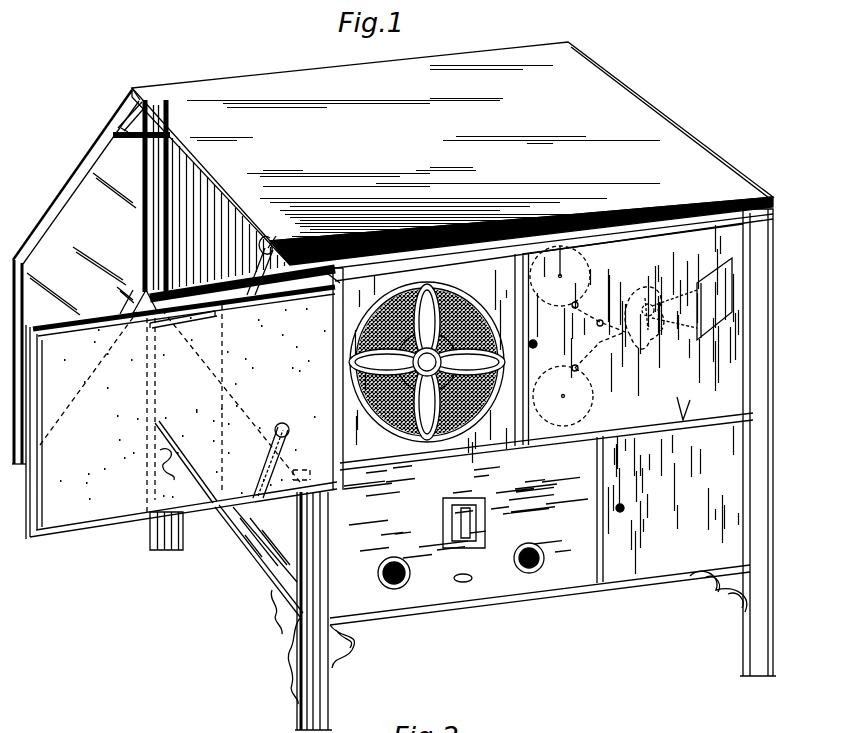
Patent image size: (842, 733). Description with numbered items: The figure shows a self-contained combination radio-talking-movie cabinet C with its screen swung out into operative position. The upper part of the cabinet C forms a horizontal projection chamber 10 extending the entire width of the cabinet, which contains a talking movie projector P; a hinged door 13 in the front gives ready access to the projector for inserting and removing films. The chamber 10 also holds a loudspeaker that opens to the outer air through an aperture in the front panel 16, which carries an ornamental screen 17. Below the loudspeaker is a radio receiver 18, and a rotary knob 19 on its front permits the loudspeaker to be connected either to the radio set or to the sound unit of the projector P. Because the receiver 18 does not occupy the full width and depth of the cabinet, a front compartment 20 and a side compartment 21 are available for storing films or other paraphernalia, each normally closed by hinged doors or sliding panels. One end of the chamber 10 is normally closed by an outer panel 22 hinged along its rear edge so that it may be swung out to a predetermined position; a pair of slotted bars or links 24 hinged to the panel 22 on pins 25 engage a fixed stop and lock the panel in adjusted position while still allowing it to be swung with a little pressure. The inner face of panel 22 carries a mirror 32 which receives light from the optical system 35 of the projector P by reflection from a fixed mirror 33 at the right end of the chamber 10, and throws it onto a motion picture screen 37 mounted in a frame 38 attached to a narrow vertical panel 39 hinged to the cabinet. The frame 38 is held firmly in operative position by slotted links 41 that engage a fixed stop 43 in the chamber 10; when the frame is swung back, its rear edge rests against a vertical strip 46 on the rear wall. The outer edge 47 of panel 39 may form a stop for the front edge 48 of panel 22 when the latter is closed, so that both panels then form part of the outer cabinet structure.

The cabinet C is at (713, 162).
The projection chamber 10 is at (207, 204).
The hinged door 13 is at (665, 237).
The talking movie projector P is at (580, 252).
The front panel 16 is at (490, 425).
The ornamental screen 17 is at (427, 362).
The radio receiver 18 is at (553, 576).
The rotary knob 19 is at (530, 573).
The front compartment 20 is at (687, 422).
The side compartment 21 is at (158, 392).
The outer panel 22 is at (72, 184).
The slotted bars or links 24 is at (128, 116).
The pins 25 is at (115, 134).
The mirror 32 is at (63, 222).
The fixed mirror 33 is at (708, 322).
The optical system 35 is at (658, 313).
The motion picture screen 37 is at (101, 510).
The frame 38 is at (52, 530).
The narrow vertical panel 39 is at (362, 269).
The slotted links 41 is at (247, 247).
The fixed stop 43 is at (282, 423).
The vertical strip 46 is at (167, 171).
The outer edge 47 is at (334, 500).
The front edge 48 is at (25, 273).